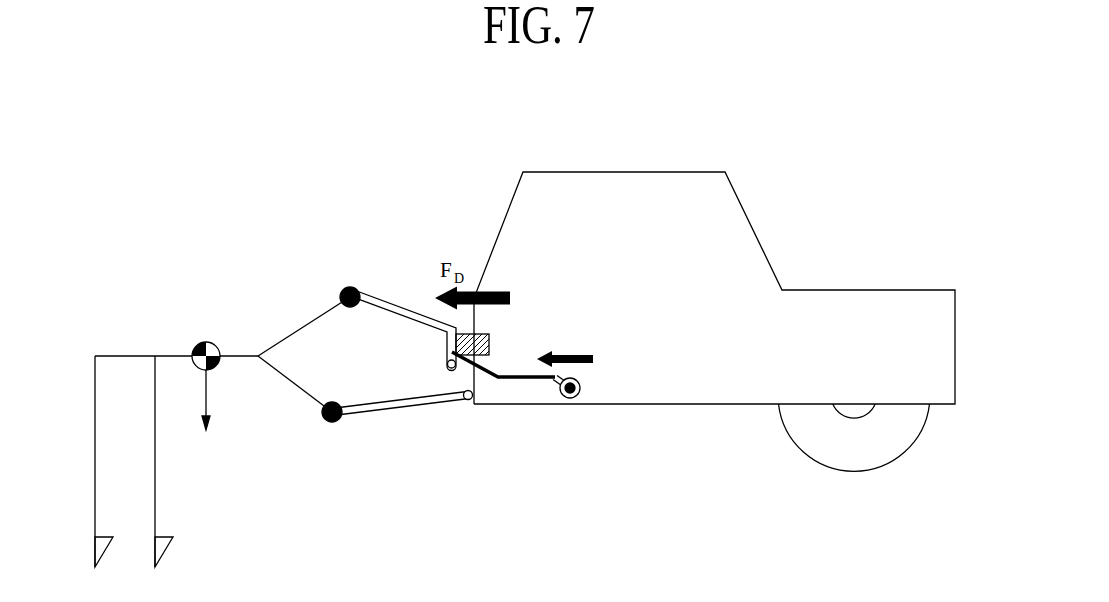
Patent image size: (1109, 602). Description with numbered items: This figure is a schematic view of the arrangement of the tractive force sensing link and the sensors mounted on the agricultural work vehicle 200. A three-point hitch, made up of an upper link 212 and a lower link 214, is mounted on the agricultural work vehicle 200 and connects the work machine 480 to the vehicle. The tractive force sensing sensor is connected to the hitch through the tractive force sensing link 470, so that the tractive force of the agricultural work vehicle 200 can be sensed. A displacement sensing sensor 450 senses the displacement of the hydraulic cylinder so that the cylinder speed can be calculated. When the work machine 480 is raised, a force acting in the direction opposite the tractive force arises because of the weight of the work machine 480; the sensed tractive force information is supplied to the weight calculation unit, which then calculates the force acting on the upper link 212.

The agricultural work vehicle 200 is at (668, 172).
The upper link 212 is at (383, 302).
The lower link 214 is at (375, 413).
The displacement sensing sensor 450 is at (571, 398).
The tractive force sensing link 470 is at (519, 379).
The work machine 480 is at (238, 352).